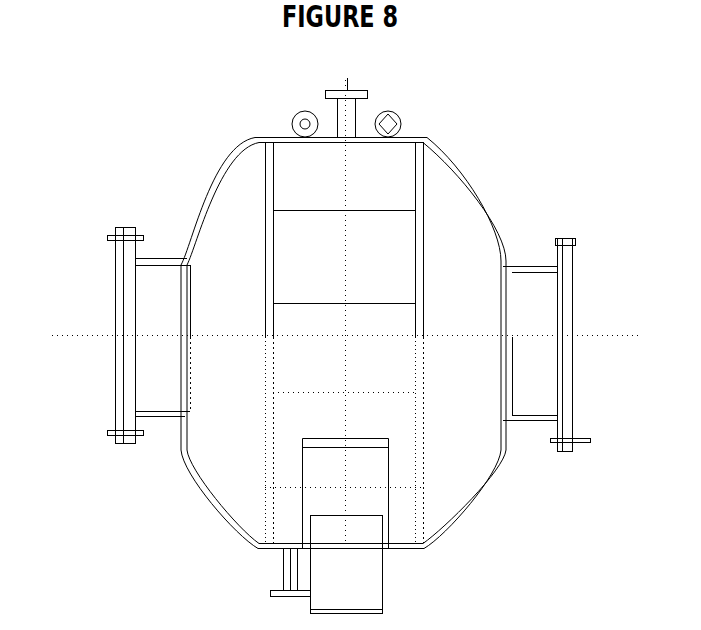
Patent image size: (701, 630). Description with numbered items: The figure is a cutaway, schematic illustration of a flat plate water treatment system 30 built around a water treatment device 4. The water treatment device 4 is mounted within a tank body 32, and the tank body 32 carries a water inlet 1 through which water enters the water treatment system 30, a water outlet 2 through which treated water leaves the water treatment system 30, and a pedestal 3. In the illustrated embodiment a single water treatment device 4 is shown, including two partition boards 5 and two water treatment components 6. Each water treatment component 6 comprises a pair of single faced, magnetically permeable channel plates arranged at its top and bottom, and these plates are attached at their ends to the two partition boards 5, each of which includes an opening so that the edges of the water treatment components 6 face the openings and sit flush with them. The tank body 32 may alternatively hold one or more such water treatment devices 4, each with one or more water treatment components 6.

The water inlet 1 is at (143, 293).
The water outlet 2 is at (550, 297).
The pedestal 3 is at (382, 573).
The water treatment device 4 is at (435, 298).
The partition board 5 is at (266, 185).
The water treatment component 6 is at (287, 253).
The flat plate water treatment system 30 is at (522, 182).
The tank body 32 is at (205, 476).